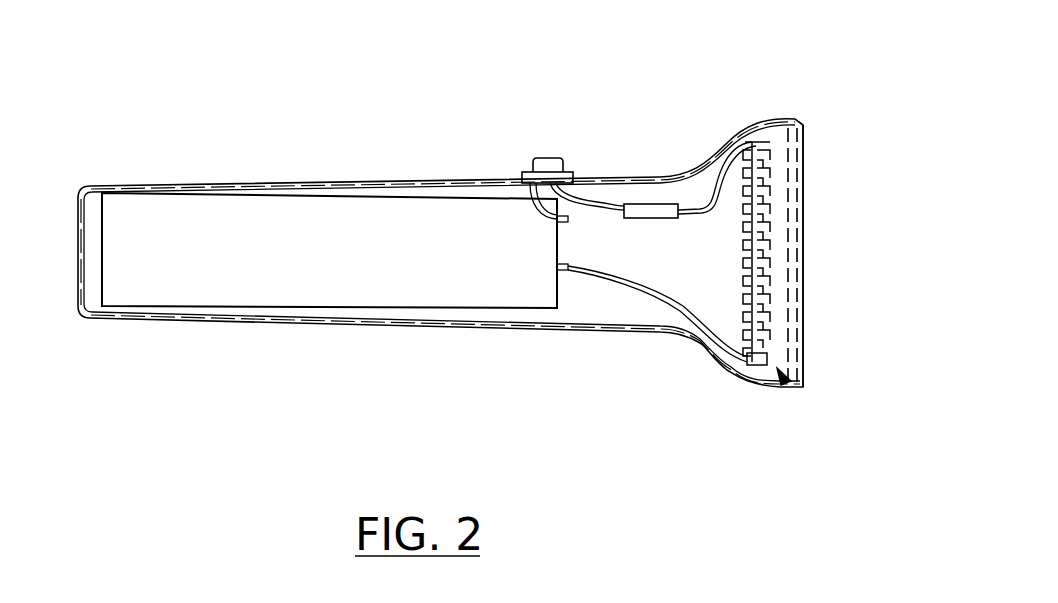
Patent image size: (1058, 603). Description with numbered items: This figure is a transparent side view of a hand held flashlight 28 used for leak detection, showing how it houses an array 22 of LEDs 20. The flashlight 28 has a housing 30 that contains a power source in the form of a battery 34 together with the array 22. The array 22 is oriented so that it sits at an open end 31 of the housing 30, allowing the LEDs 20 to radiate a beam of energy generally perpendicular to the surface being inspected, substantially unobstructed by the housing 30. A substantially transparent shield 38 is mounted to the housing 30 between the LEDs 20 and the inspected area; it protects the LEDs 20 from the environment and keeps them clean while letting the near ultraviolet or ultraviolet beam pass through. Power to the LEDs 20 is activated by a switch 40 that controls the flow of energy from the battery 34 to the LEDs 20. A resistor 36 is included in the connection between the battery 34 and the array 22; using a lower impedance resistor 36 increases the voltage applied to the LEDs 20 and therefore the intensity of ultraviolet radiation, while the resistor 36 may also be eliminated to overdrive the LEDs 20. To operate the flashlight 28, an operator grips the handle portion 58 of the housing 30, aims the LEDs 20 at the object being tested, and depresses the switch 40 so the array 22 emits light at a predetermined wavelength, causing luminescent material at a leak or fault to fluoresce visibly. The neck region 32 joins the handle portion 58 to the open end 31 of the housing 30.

The LEDs 20 is at (763, 143).
The array 22 is at (791, 388).
The flashlight 28 is at (406, 130).
The housing 30 is at (403, 326).
The open end 31 is at (803, 377).
The neck portion 32 is at (758, 388).
The battery 34 is at (172, 210).
The resistor 36 is at (643, 219).
The transparent shield 38 is at (797, 157).
The switch 40 is at (547, 158).
The handle portion 58 is at (245, 182).